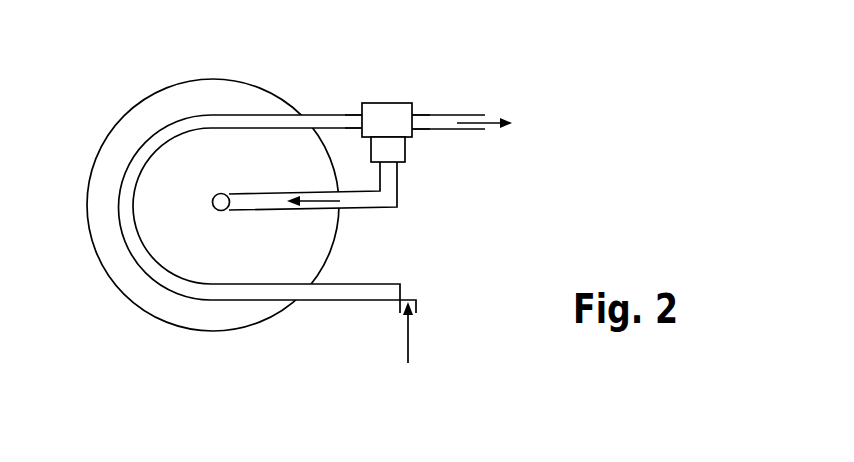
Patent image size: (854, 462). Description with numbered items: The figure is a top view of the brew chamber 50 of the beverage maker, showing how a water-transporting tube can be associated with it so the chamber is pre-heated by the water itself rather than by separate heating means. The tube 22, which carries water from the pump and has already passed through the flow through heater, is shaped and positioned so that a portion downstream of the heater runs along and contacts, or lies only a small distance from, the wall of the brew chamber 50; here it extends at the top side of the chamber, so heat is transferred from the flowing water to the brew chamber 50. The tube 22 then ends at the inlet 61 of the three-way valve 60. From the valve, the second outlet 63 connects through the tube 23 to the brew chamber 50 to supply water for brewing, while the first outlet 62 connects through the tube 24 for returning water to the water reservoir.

The brew chamber 50 is at (165, 105).
The tube 22 is at (338, 290).
The tube 23 is at (362, 200).
The tube 24 is at (440, 118).
The three-way valve 60 is at (387, 113).
The inlet 61 is at (360, 118).
The first outlet 62 is at (415, 118).
The second outlet 63 is at (388, 163).